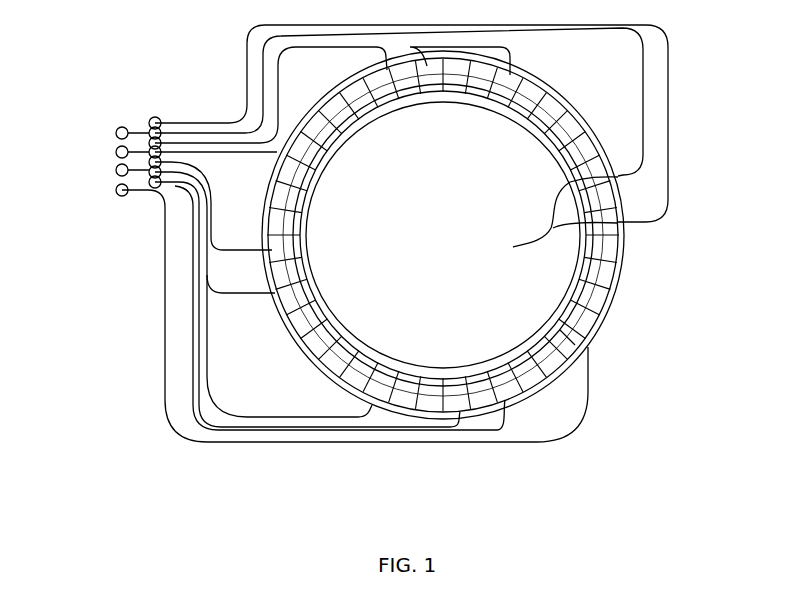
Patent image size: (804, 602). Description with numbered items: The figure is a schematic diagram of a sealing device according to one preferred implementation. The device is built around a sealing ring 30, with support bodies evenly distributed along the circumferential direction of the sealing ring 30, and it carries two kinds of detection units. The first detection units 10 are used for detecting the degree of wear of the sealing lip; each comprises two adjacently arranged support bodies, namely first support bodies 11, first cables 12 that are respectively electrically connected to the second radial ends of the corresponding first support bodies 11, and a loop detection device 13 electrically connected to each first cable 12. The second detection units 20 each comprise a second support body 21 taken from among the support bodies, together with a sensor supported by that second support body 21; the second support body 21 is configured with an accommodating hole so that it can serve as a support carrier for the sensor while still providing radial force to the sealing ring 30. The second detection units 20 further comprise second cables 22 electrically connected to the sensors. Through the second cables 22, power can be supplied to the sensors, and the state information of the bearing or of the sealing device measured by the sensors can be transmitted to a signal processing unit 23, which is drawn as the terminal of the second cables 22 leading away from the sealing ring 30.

The first detection unit 10 is at (700, 122).
The first support body 11 is at (399, 144).
The first cable 12 is at (668, 165).
The loop detection device 13 is at (155, 120).
The second detection unit 20 is at (600, 350).
The second support body 21 is at (563, 337).
The second cable 22 is at (588, 388).
The signal processing unit 23 is at (118, 192).
The sealing ring 30 is at (613, 288).